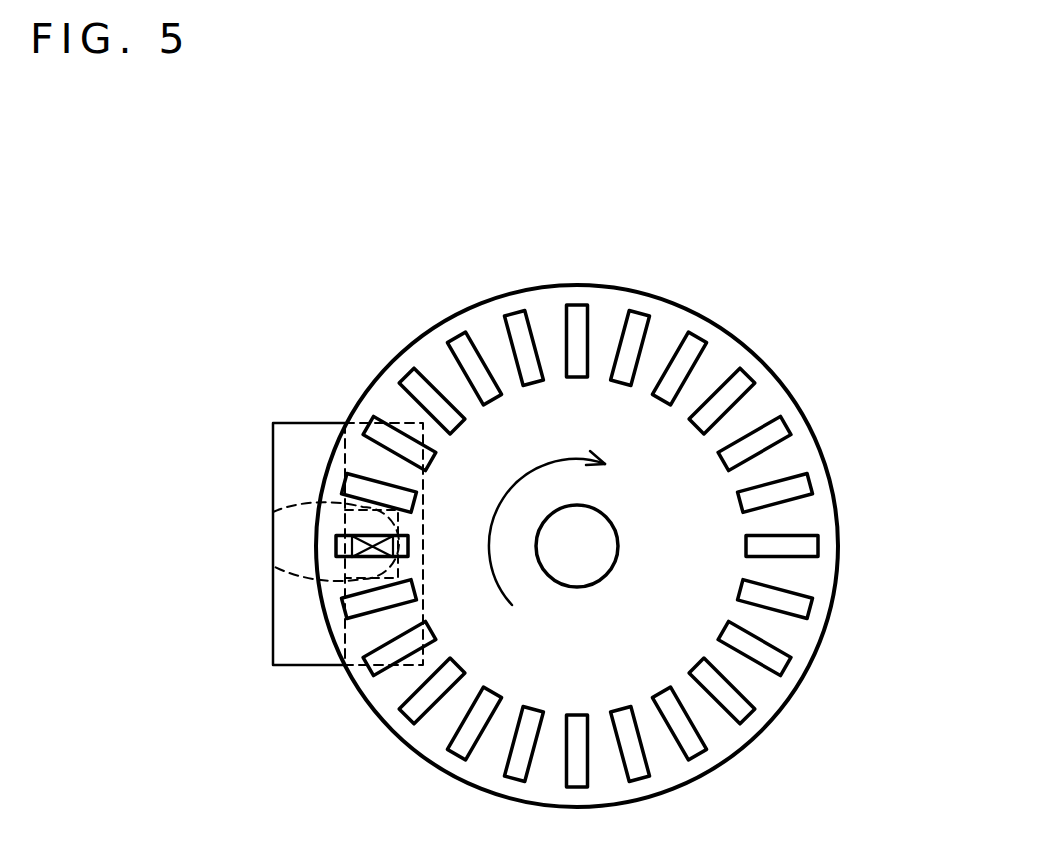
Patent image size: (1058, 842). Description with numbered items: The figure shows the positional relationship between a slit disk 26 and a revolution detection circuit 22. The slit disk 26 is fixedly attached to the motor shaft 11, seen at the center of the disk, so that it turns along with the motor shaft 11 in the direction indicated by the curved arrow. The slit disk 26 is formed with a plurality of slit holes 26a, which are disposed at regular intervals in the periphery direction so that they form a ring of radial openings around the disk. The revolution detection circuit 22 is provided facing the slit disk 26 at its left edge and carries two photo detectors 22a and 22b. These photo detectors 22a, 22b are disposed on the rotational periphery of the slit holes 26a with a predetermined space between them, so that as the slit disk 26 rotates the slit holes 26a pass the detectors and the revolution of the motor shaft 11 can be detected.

The motor shaft 11 is at (620, 553).
The revolution detection circuit 22 is at (303, 422).
The photo detector 22a is at (273, 512).
The photo detector 22b is at (273, 565).
The slit disk 26 is at (683, 308).
The slit holes 26a is at (813, 483).